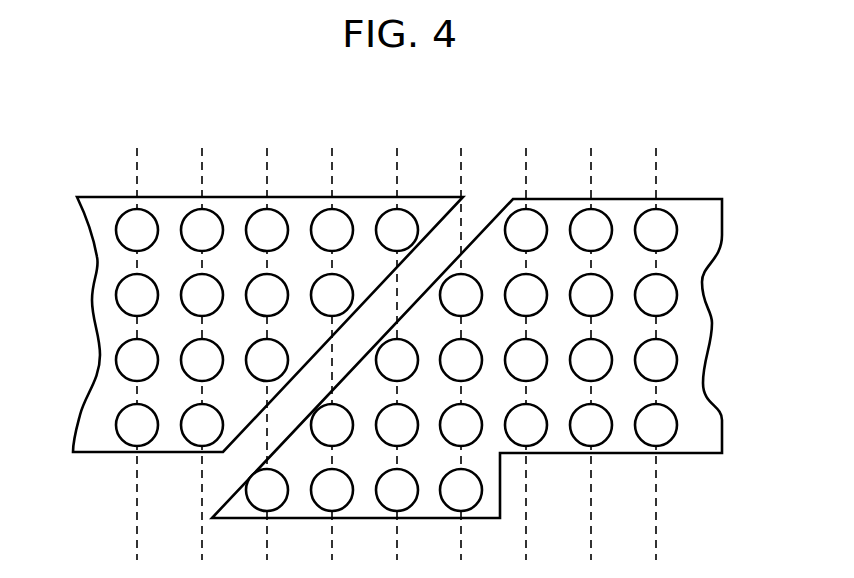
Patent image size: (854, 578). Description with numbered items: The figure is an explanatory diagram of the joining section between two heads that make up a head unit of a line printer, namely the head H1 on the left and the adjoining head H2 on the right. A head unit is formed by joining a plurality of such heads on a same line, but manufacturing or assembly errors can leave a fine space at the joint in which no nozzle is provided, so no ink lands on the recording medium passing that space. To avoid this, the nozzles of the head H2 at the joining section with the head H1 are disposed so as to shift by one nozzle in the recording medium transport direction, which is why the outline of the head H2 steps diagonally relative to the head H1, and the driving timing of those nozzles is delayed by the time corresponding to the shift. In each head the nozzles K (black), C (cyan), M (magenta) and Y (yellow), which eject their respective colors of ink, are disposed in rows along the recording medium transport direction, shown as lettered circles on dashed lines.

The head H1 is at (167, 197).
The head H2 is at (627, 199).
The nozzle (black) K is at (396, 262).
The nozzle (cyan) C is at (396, 327).
The nozzle (magenta) M is at (396, 392).
The nozzle (yellow) Y is at (396, 457).